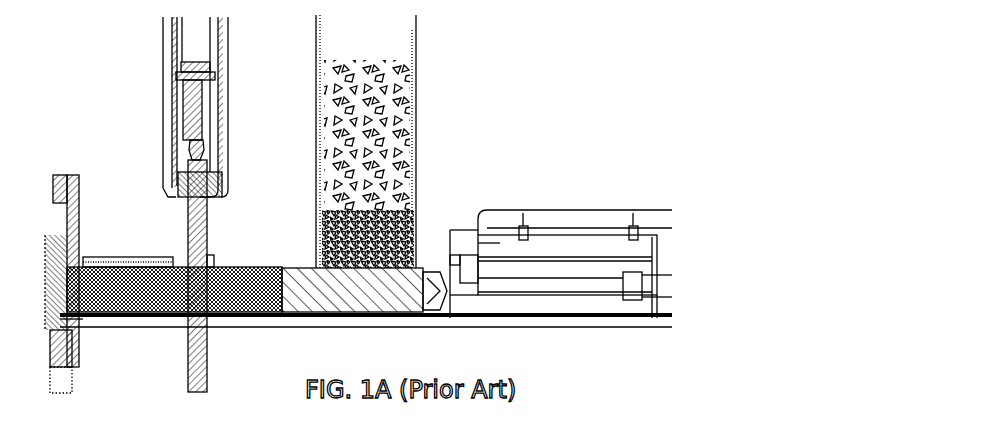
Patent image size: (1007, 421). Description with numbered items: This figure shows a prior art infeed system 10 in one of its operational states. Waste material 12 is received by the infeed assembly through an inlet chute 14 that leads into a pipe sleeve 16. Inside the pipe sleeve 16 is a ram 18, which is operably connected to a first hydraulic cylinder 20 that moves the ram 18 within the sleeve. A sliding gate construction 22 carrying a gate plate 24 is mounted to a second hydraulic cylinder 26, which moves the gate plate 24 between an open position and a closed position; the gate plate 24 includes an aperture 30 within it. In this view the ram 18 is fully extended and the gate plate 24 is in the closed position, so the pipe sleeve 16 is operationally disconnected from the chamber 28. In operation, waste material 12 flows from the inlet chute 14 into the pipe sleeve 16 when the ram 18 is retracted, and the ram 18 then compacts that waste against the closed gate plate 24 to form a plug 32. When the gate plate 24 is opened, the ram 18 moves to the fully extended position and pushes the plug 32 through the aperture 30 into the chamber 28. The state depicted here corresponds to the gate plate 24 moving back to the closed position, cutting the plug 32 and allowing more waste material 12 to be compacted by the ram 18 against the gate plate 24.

The infeed system 10 is at (684, 52).
The waste material 12 is at (392, 105).
The inlet chute 14 is at (418, 178).
The pipe sleeve 16 is at (278, 313).
The ram 18 is at (418, 272).
The first hydraulic cylinder 20 is at (535, 282).
The sliding gate construction 22 is at (163, 126).
The gate plate 24 is at (182, 180).
The second hydraulic cylinder 26 is at (198, 50).
The chamber 28 is at (127, 255).
The aperture 30 is at (188, 352).
The plug 32 is at (251, 277).